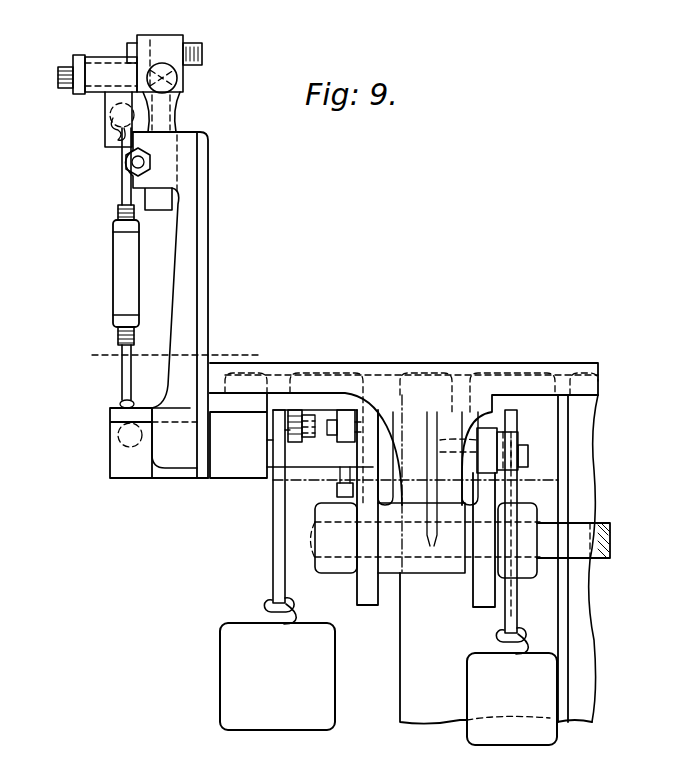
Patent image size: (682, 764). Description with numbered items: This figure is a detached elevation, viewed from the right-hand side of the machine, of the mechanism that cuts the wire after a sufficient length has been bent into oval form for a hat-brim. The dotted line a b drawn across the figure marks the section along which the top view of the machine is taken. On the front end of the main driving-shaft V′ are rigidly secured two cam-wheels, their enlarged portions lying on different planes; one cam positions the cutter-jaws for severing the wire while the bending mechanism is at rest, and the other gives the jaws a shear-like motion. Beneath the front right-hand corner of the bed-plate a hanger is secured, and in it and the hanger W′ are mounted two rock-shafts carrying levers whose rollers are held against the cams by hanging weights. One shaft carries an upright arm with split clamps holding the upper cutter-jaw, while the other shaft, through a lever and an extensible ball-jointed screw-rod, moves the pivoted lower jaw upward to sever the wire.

The dotted line a b is at (176, 352).
The frame A is at (404, 543).
The hanger W′ is at (427, 492).
The main driving-shaft V′ is at (573, 540).